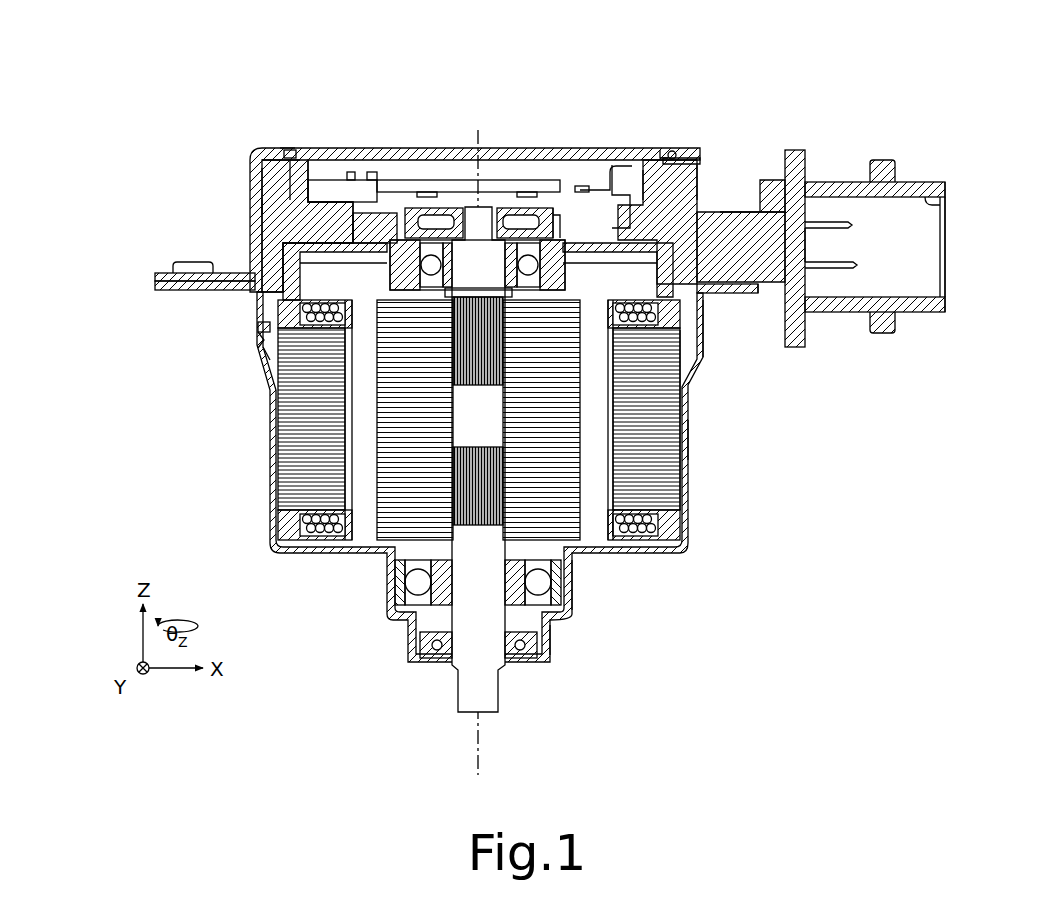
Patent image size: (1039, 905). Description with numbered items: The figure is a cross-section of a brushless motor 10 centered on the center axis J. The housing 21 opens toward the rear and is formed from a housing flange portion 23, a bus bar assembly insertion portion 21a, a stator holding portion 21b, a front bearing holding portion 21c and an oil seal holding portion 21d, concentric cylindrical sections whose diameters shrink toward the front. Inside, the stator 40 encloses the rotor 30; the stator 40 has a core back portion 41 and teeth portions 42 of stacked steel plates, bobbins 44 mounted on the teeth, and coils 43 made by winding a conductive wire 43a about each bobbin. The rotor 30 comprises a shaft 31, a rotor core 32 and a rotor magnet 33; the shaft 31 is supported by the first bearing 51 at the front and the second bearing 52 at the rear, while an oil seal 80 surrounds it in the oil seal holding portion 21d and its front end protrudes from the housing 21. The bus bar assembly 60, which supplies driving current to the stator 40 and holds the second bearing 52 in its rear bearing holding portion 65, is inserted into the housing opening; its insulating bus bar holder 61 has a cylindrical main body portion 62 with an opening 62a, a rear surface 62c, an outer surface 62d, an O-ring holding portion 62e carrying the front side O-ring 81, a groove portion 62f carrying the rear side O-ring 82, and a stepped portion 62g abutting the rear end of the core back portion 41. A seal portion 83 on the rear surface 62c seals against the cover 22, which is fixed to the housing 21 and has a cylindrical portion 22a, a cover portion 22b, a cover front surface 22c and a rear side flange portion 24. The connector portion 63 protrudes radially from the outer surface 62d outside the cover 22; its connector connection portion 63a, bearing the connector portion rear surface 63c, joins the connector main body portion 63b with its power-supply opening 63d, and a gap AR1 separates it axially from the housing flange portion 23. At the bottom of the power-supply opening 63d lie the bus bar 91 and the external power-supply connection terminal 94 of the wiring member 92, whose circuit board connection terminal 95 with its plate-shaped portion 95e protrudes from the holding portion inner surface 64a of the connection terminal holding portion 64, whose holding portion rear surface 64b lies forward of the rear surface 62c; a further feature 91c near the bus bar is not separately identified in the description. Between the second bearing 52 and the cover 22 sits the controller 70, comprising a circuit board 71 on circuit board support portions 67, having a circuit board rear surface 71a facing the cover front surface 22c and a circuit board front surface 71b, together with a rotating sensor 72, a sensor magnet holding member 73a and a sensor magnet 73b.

The motor 10 is at (941, 152).
The housing 21 is at (246, 450).
The bus bar assembly insertion portion 21a is at (704, 320).
The stator holding portion 21b is at (690, 440).
The front bearing holding portion 21c is at (573, 596).
The oil seal holding portion 21d is at (550, 640).
The cover 22 is at (242, 200).
The cylindrical portion 22a is at (258, 188).
The cover portion 22b is at (617, 185).
The cover front surface 22c is at (688, 190).
The housing flange portion 23 is at (158, 287).
The rear side flange portion 24 is at (158, 276).
The rotor 30 is at (517, 415).
The shaft 31 is at (498, 598).
The rotor core 32 is at (545, 462).
The rotor magnet 33 is at (598, 510).
The stator 40 is at (485, 451).
The core back portion 41 is at (310, 482).
The teeth portions 42 is at (320, 505).
The coils 43 is at (650, 520).
The conductive wire 43a is at (650, 538).
The bobbins 44 is at (682, 520).
The first bearing 51 is at (412, 587).
The second bearing 52 is at (443, 262).
The bus bar assembly 60 is at (898, 239).
The bus bar holder 61 is at (797, 352).
The main body portion 62 is at (278, 162).
The opening 62a is at (300, 170).
The main body rear surface 62c is at (638, 185).
The main body outer surface 62d is at (258, 212).
The O-ring holding portion 62e is at (258, 333).
The groove portion 62f is at (285, 148).
The stepped portion 62g is at (270, 352).
The connector portion 63 is at (898, 192).
The connector connection portion 63a is at (797, 150).
The connector main body portion 63b is at (912, 182).
The connector portion rear surface 63c is at (752, 212).
The power-supply opening 63d is at (934, 202).
The connection terminal holding portion 64 is at (668, 213).
The holding portion inner surface 64a is at (715, 293).
The holding portion rear surface 64b is at (680, 152).
The rear bearing holding portion 65 is at (553, 230).
The circuit board support portions 67 is at (283, 247).
The controller 70 is at (566, 246).
The circuit board 71 is at (435, 182).
The circuit board rear surface 71a is at (473, 180).
The circuit board front surface 71b is at (597, 178).
The rotating sensor 72 is at (520, 210).
The sensor magnet holding member 73a is at (455, 208).
The sensor magnet 73b is at (562, 302).
The oil seal 80 is at (540, 648).
The front side O-ring 81 is at (262, 335).
The rear side O-ring 82 is at (291, 150).
The seal portion 83 is at (670, 152).
The bus bar 91 is at (828, 268).
The terminal block 91c is at (335, 180).
The wiring member 92 is at (831, 218).
The external power-supply connection terminal 94 is at (855, 266).
The circuit board connection terminal 95 is at (598, 168).
The plate-shaped portion 95e is at (592, 186).
The gap AR1 is at (768, 298).
The center axis J is at (480, 737).